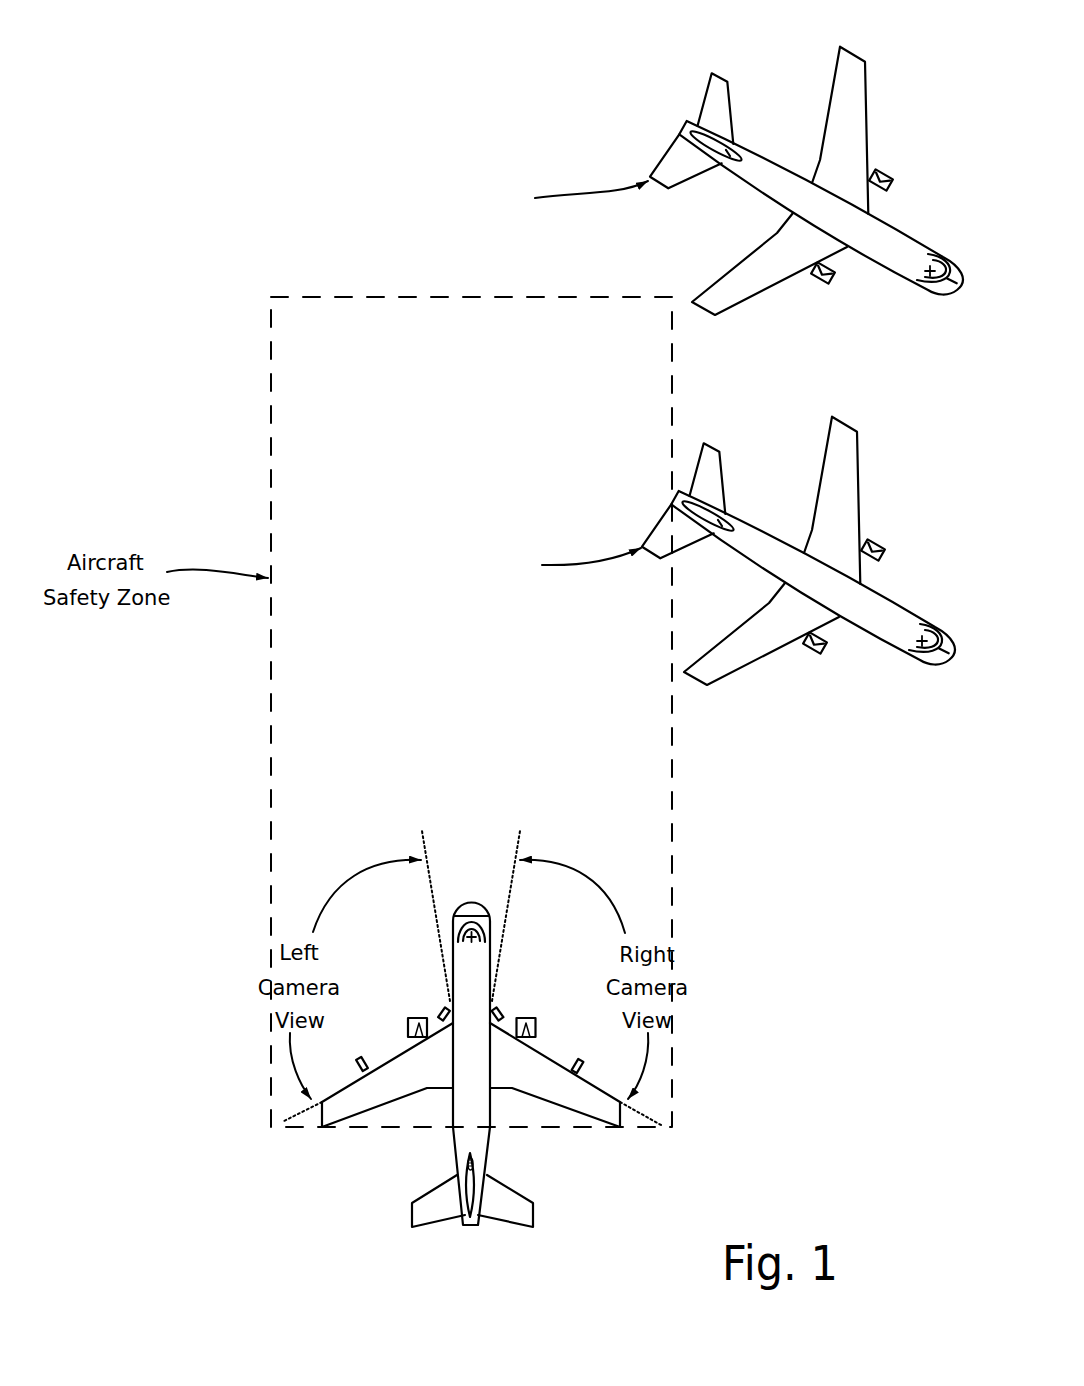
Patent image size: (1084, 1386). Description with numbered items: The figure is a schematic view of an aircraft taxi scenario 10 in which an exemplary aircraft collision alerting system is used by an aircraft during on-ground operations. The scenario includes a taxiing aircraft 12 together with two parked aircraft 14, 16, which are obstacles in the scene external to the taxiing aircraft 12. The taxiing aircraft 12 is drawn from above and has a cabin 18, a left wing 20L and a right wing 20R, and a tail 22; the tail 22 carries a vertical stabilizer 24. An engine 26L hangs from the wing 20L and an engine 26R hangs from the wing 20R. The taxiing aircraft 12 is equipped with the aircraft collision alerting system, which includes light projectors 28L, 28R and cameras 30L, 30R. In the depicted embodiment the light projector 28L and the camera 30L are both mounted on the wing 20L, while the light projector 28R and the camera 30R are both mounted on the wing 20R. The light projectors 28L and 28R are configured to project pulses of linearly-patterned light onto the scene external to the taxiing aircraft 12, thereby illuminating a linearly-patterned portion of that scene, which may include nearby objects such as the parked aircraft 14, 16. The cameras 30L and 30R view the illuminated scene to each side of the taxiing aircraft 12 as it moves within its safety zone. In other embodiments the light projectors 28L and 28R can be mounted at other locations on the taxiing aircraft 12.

The aircraft taxi scenario 10 is at (192, 145).
The taxiing aircraft 12 is at (478, 1059).
The parked aircraft 14 is at (791, 518).
The parked aircraft 16 is at (795, 131).
The cabin 18 is at (483, 1053).
The wing 20L is at (432, 1085).
The wing 20R is at (540, 1085).
The tail 22 is at (482, 1168).
The vertical stabilizer 24 is at (482, 1195).
The engine 26L is at (412, 1020).
The engine 26R is at (529, 1018).
The light projector 28L is at (362, 1059).
The light projector 28R is at (578, 1059).
The camera 30L is at (441, 1008).
The camera 30R is at (501, 1008).